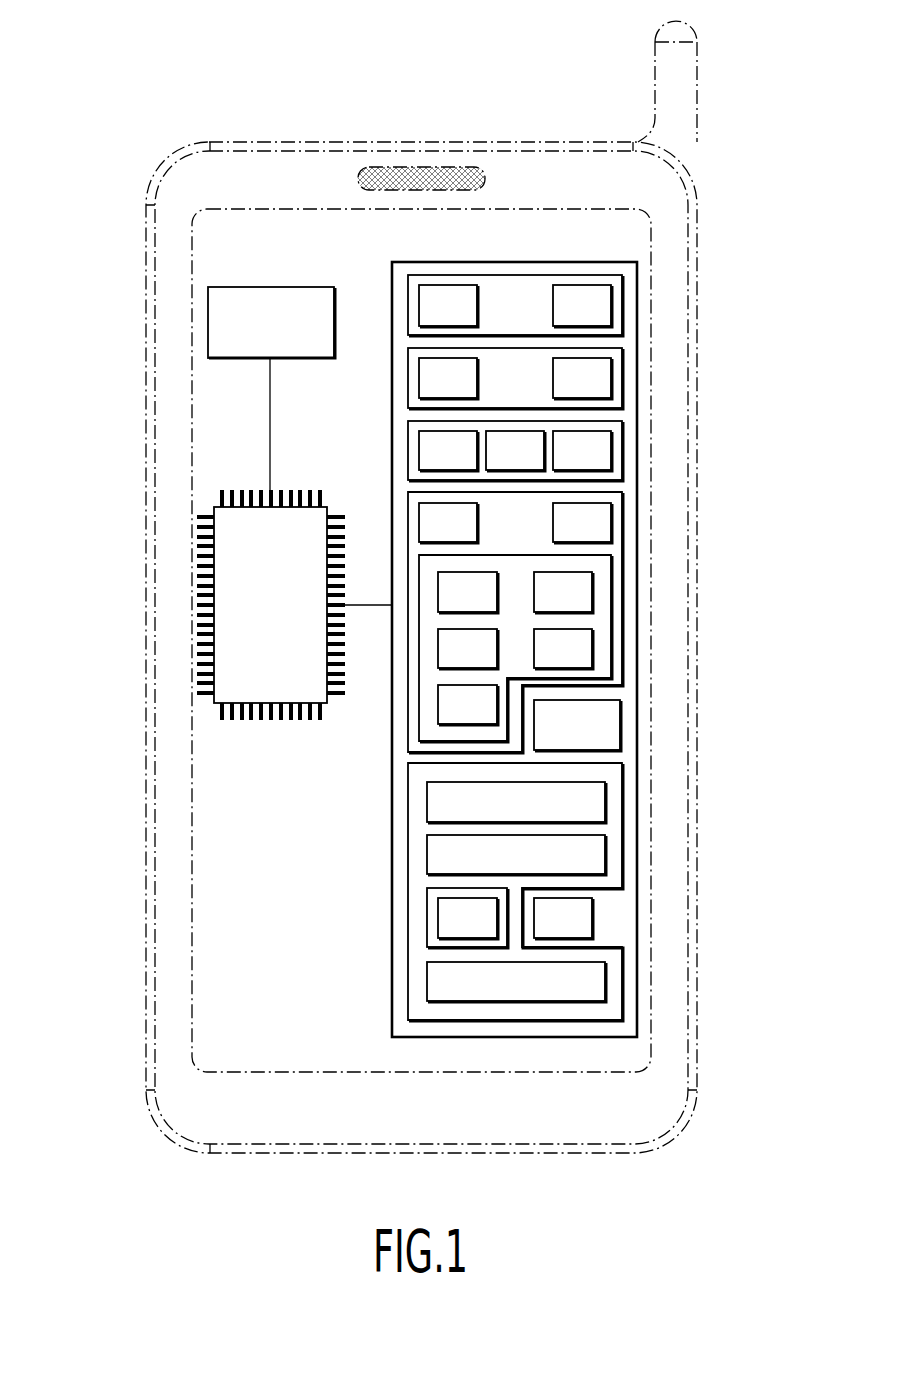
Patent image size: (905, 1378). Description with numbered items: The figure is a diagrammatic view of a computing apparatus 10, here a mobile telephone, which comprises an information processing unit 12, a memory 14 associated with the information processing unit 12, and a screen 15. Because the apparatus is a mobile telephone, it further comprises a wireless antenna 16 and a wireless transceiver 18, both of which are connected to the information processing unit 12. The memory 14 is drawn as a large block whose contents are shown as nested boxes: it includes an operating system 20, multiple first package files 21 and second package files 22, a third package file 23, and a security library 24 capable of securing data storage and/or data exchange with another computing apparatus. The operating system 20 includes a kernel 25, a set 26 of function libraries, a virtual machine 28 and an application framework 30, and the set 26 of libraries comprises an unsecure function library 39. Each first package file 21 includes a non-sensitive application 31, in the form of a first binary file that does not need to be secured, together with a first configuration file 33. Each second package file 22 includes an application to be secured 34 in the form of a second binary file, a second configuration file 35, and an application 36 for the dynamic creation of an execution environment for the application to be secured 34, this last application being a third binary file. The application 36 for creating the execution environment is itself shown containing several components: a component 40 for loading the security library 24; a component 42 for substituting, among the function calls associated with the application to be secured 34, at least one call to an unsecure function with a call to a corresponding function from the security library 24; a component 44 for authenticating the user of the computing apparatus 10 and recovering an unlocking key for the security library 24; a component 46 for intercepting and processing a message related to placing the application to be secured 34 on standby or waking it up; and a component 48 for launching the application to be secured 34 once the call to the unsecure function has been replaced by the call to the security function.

The computing apparatus 10 is at (148, 146).
The information processing unit 12 is at (240, 648).
The memory 14 is at (637, 605).
The screen 15 is at (207, 818).
The wireless antenna 16 is at (677, 103).
The wireless transceiver 18 is at (292, 287).
The operating system 20 is at (622, 835).
The first package file 21 is at (622, 307).
The second package file 22 is at (622, 453).
The third package file 23 is at (620, 725).
The security library 24 is at (563, 918).
The kernel 25 is at (516, 982).
The set of function libraries 26 is at (427, 918).
The virtual machine 28 is at (516, 855).
The application framework 30 is at (427, 806).
The non-sensitive application 31 is at (448, 342).
The first configuration file 33 is at (582, 342).
The application to be secured 34 is at (448, 487).
The second configuration file 35 is at (549, 487).
The application for the dynamic creation of an execution environment 36 is at (352, 736).
The unsecure function library 39 is at (468, 918).
The component for loading the security library 40 is at (468, 592).
The component for substituting function calls 42 is at (563, 592).
The component for authenticating the user 44 is at (468, 649).
The component for intercepting and processing a message 46 is at (563, 649).
The component for launching the application to be secured 48 is at (468, 705).